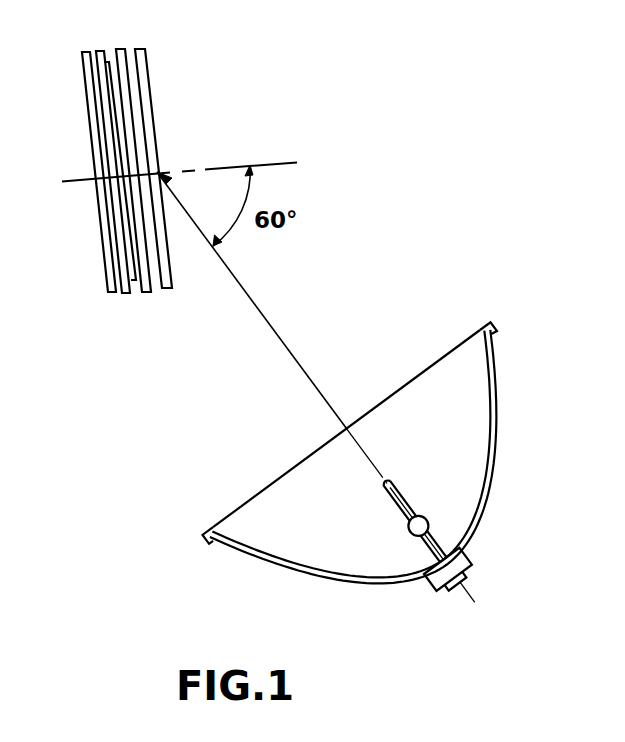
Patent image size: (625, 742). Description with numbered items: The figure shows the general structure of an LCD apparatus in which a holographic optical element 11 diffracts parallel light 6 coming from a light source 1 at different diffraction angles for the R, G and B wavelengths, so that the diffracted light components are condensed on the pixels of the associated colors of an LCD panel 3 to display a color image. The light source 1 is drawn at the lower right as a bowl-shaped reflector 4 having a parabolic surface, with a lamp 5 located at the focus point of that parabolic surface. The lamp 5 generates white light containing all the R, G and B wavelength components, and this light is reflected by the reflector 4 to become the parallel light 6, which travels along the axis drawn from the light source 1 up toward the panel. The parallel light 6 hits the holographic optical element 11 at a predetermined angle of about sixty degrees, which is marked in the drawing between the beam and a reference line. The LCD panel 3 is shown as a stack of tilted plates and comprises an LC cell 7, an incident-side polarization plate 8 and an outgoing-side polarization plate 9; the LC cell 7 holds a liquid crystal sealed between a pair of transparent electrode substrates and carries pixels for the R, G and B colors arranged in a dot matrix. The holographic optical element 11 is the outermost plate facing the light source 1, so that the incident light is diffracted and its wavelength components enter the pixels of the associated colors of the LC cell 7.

The light source 1 is at (383, 477).
The LCD panel 3 is at (126, 171).
The reflector 4 is at (497, 400).
The lamp 5 is at (428, 520).
The parallel light 6 is at (298, 361).
The LC cell 7 is at (100, 51).
The incident-side polarization plate 8 is at (121, 49).
The outgoing-side polarization plate 9 is at (84, 54).
The holographic optical element 11 is at (146, 50).